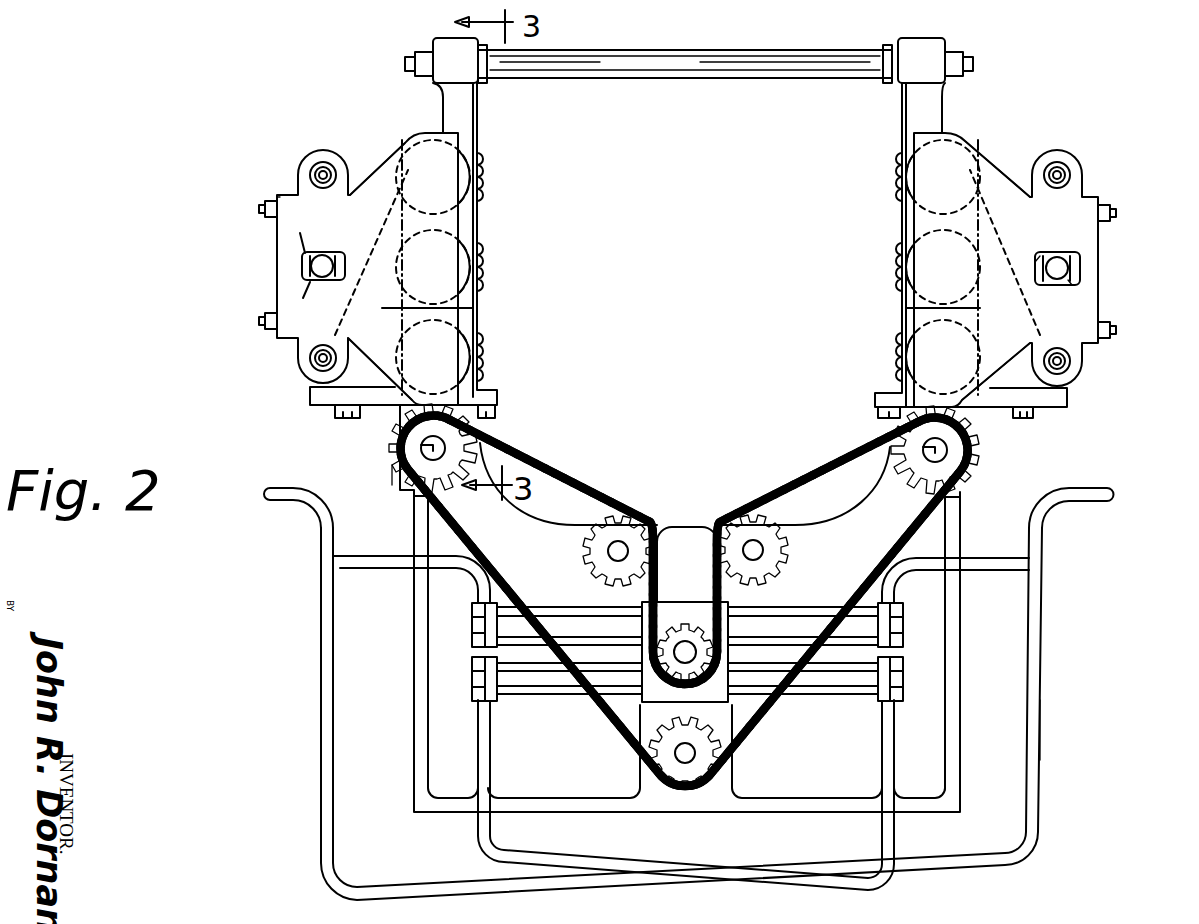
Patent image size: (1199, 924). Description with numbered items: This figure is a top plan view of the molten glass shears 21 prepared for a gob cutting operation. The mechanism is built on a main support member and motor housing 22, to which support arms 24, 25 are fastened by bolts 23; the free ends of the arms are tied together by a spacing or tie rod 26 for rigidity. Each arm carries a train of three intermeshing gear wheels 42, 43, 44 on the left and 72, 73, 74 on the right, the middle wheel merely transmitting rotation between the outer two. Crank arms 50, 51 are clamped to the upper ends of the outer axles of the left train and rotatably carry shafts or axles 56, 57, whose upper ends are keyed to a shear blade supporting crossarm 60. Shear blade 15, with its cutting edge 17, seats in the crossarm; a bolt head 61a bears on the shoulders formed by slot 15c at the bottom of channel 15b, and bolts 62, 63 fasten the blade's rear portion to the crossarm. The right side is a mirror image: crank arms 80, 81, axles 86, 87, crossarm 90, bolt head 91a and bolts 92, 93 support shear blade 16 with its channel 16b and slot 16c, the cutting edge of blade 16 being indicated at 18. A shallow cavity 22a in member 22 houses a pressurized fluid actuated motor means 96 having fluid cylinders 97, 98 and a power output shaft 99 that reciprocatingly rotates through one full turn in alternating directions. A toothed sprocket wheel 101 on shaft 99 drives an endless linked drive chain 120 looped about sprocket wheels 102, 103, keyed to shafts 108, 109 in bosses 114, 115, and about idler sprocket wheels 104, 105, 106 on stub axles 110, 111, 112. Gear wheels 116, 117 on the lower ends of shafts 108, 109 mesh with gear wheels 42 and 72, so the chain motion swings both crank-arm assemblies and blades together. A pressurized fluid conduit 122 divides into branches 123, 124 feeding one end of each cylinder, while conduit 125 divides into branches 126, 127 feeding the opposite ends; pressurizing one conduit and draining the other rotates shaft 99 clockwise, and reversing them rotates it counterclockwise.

The shear blade 15 is at (372, 232).
The groove or channel 15b is at (307, 304).
The slot 15c is at (306, 229).
The shear blade 16 is at (957, 272).
The groove or channel 16b is at (1068, 280).
The slot 16c is at (1035, 262).
The cutting edge 17 is at (415, 308).
The housing partition 18 is at (960, 309).
The glass shears 21 is at (318, 132).
The main support member and motor housing 22 is at (838, 789).
The cavity 22a is at (938, 679).
The bolts 23 is at (340, 420).
The support arm 24 is at (463, 110).
The support arm 25 is at (922, 108).
The spacing or tie rod 26 is at (672, 78).
The gear wheel 42 is at (486, 348).
The gear wheel 43 is at (486, 258).
The gear wheel 44 is at (486, 168).
The crank arm 50 is at (362, 370).
The crank arm 51 is at (364, 160).
The shaft or axle 56 is at (312, 357).
The shaft or axle 57 is at (312, 170).
The shear blade supporting crossarm 60 is at (302, 188).
The bolt head 61a is at (313, 272).
The bolt 62 is at (259, 208).
The bolt 63 is at (259, 322).
The gear wheel 72 is at (893, 357).
The gear wheel 73 is at (893, 270).
The gear wheel 74 is at (893, 178).
The crank arm 80 is at (1012, 375).
The crank arm 81 is at (1015, 167).
The shaft or axle 86 is at (1062, 362).
The shaft or axle 87 is at (1057, 177).
The shear blade supporting crossarm 90 is at (1080, 190).
The bolt head 91a is at (1056, 262).
The bolt 92 is at (1117, 213).
The bolt 93 is at (1117, 330).
The motor means 96 is at (640, 705).
The fluid cylinder or tube 97 is at (808, 627).
The fluid cylinder or tube 98 is at (830, 683).
The power output shaft 99 is at (685, 648).
The toothed sprocket wheel 101 is at (698, 627).
The sprocket wheel 102 is at (455, 445).
The sprocket wheel 103 is at (968, 477).
The idler sprocket wheel 104 is at (587, 546).
The idler sprocket wheel 105 is at (748, 521).
The idler sprocket wheel 106 is at (703, 757).
The shaft or axle 108 is at (425, 448).
The shaft or axle 109 is at (943, 455).
The stub axle 110 is at (611, 557).
The stub axle 111 is at (763, 550).
The stub axle 112 is at (676, 756).
The boss 114 is at (400, 487).
The boss 115 is at (962, 492).
The toothed gear wheel 116 is at (517, 450).
The toothed gear wheel 117 is at (888, 460).
The endless linked drive chain 120 is at (578, 485).
The pressurized fluid conduit 122 is at (292, 496).
The conduit branch 123 is at (368, 556).
The conduit branch 124 is at (325, 677).
The pressurized fluid conduit 125 is at (1041, 532).
The conduit branch 126 is at (988, 570).
The conduit branch 127 is at (1041, 720).